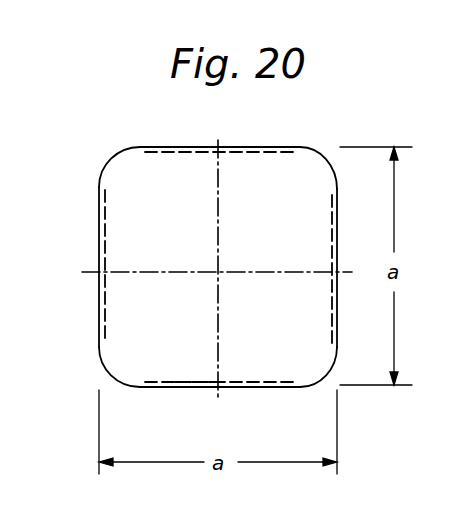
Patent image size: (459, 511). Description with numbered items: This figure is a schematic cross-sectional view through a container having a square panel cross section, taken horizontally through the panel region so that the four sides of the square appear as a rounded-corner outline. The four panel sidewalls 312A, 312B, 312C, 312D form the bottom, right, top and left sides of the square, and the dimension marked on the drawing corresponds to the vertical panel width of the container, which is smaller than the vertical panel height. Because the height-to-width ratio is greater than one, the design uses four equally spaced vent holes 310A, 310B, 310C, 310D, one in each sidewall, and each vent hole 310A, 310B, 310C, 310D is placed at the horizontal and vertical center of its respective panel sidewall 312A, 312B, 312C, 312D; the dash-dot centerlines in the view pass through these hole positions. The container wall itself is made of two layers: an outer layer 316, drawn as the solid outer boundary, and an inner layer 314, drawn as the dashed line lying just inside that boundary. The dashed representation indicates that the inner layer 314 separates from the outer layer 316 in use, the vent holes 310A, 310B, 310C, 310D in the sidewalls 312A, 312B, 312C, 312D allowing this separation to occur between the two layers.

The vent hole 310A is at (218, 389).
The vent hole 310B is at (338, 268).
The vent hole 310C is at (222, 147).
The vent hole 310D is at (98, 268).
The panel sidewall 312A is at (268, 389).
The panel sidewall 312B is at (337, 316).
The panel sidewall 312C is at (272, 147).
The panel sidewall 312D is at (98, 296).
The inner layer 314 is at (190, 381).
The outer layer 316 is at (175, 389).